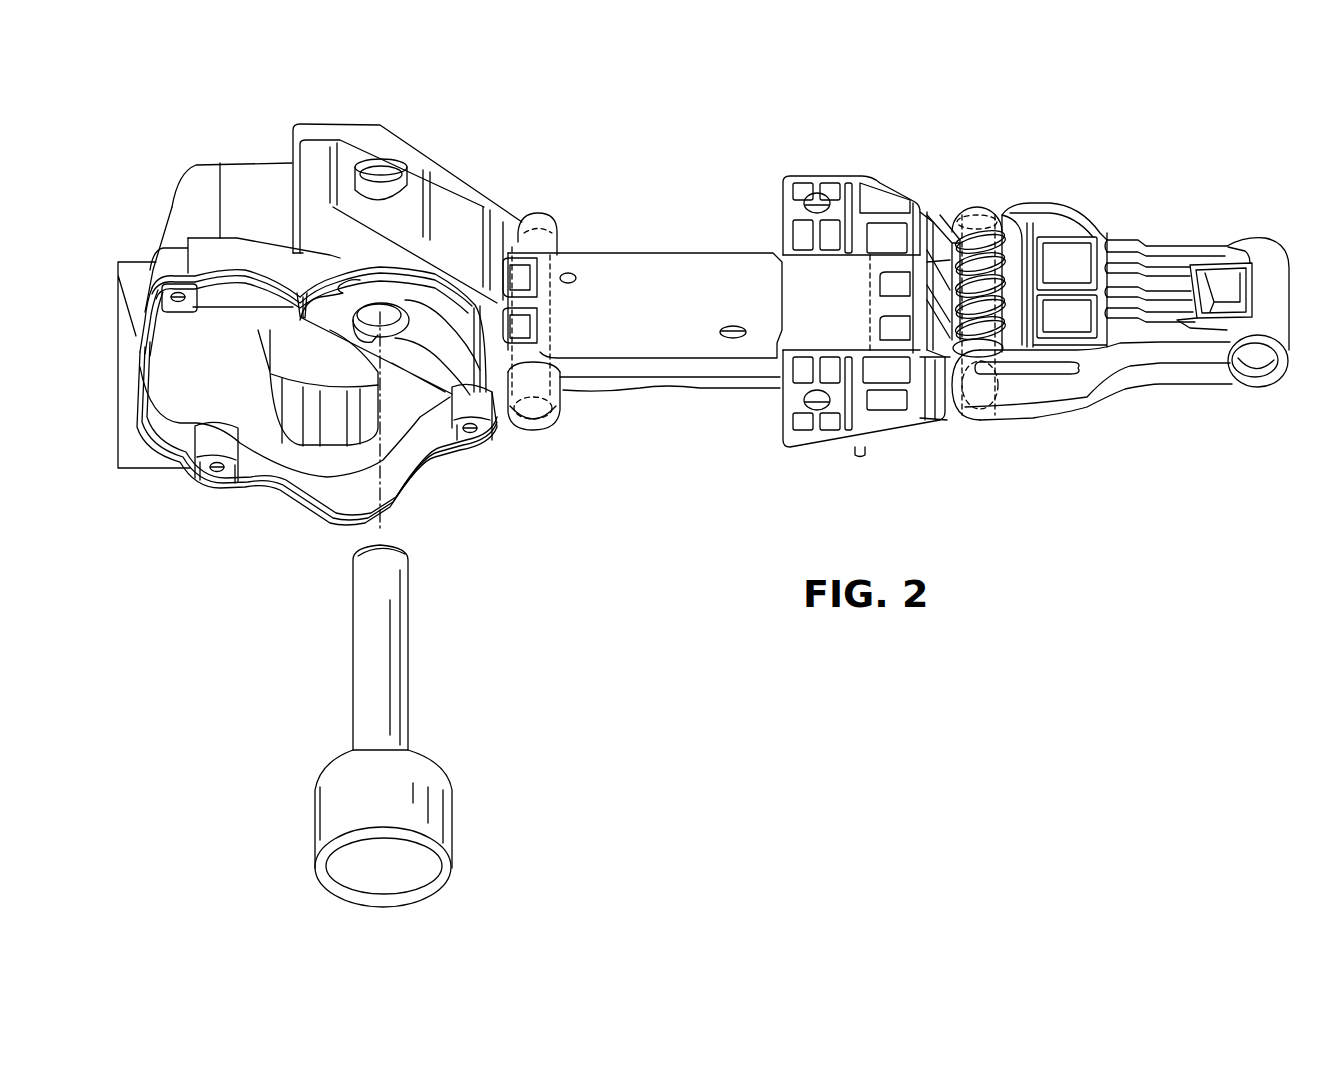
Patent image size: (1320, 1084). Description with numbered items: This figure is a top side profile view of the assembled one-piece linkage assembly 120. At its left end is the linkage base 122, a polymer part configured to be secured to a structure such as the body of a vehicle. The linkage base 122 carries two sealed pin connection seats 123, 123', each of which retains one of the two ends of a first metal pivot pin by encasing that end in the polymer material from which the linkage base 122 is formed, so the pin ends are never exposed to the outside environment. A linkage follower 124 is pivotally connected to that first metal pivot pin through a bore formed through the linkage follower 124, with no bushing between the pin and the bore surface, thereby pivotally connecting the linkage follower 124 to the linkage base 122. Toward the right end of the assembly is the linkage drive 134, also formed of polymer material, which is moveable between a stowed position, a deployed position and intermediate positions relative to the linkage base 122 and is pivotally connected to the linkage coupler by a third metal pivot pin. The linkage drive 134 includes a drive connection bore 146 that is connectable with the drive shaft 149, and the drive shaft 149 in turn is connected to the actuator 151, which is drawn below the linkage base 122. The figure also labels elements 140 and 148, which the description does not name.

The one-piece linkage assembly 120 is at (873, 140).
The linkage base 122 is at (188, 172).
The sealed pin connection seat 123 is at (562, 272).
The sealed pin connection seat 123' is at (564, 416).
The linkage follower 124 is at (639, 278).
The linkage drive 134 is at (1162, 245).
The mounting hole 140 is at (817, 204).
The drive connection bore 146 is at (1250, 372).
The boss 148 is at (373, 171).
The drive shaft 149 is at (398, 643).
The actuator 151 is at (420, 785).